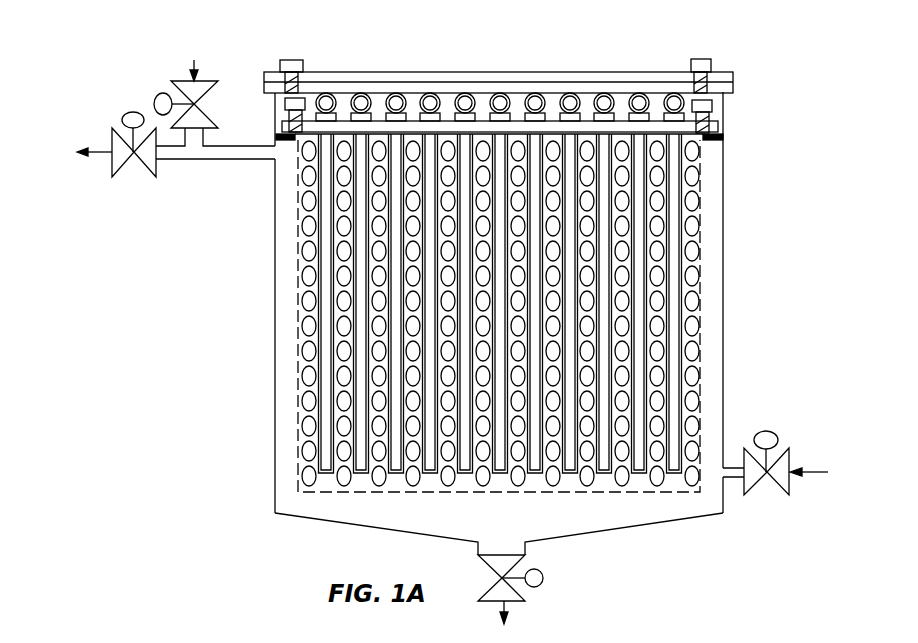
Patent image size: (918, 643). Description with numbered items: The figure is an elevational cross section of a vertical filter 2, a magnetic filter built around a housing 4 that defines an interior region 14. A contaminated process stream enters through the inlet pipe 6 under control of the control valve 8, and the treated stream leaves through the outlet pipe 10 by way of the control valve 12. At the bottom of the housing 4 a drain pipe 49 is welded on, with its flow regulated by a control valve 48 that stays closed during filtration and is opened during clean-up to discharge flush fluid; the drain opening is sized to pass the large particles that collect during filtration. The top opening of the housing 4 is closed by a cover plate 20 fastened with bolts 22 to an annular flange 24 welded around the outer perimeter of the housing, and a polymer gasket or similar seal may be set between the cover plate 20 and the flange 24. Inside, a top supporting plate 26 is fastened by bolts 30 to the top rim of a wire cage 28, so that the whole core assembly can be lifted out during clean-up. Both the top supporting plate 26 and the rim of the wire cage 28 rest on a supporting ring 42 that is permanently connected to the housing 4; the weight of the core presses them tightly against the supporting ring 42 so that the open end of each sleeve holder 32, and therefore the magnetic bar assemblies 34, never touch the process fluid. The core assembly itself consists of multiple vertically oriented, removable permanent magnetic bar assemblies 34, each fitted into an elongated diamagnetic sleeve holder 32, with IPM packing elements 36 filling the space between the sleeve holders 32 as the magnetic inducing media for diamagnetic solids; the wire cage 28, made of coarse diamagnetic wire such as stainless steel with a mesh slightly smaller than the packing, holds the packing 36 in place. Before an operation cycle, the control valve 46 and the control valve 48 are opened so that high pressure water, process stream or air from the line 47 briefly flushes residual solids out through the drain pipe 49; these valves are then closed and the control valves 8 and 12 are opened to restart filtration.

The vertical filter 2 is at (214, 225).
The housing 4 is at (275, 270).
The inlet pipe 6 is at (813, 468).
The control valve 8 is at (768, 432).
The outlet pipe 10 is at (95, 154).
The control valve 12 is at (128, 113).
The interior region 14 is at (517, 526).
The cover plate 20 is at (733, 80).
The bolts 22 is at (711, 66).
The annular flange 24 is at (284, 100).
The top supporting plate 26 is at (716, 121).
The wire cage 28 is at (298, 326).
The bolts 30 is at (285, 105).
The sleeve holder 32 is at (318, 363).
The magnetic bar assemblies 34 is at (674, 265).
The IPM packing elements 36 is at (309, 403).
The supporting ring 42 is at (713, 141).
The control valve 46 is at (157, 96).
The line 47 is at (199, 65).
The control valve 48 is at (541, 571).
The drain pipe 49 is at (507, 607).